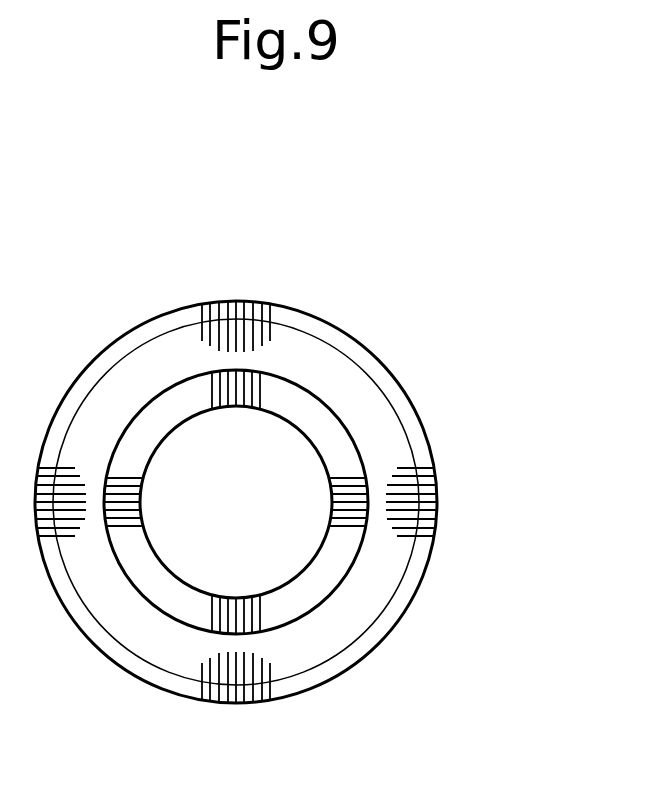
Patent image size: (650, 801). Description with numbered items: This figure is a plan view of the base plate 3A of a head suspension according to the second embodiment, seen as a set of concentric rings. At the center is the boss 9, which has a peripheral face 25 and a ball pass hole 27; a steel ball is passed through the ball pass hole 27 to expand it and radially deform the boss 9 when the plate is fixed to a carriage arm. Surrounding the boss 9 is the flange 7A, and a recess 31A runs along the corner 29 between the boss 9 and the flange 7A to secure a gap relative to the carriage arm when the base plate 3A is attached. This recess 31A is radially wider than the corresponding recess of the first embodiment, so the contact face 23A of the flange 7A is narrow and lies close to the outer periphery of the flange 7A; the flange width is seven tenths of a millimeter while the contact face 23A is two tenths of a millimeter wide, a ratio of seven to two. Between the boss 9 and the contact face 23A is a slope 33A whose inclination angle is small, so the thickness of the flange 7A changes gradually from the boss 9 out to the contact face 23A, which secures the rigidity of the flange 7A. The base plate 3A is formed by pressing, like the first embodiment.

The base plate 3A is at (340, 327).
The flange 7A is at (372, 425).
The boss 9 is at (286, 398).
The contact face 23A is at (414, 593).
The peripheral face 25 is at (370, 543).
The ball pass hole 27 is at (320, 458).
The corner 29 is at (338, 410).
The recess 31A is at (397, 422).
The slope 33A is at (398, 443).